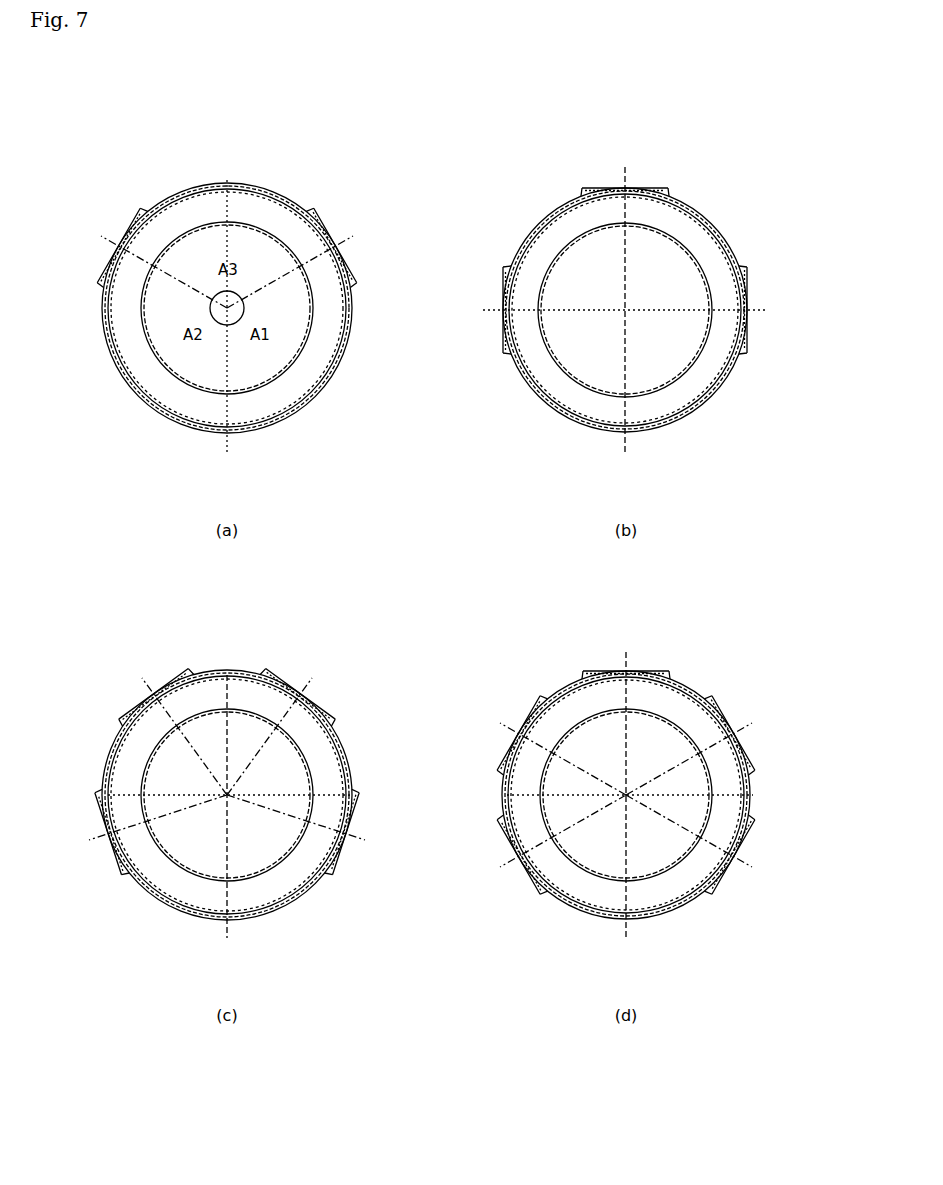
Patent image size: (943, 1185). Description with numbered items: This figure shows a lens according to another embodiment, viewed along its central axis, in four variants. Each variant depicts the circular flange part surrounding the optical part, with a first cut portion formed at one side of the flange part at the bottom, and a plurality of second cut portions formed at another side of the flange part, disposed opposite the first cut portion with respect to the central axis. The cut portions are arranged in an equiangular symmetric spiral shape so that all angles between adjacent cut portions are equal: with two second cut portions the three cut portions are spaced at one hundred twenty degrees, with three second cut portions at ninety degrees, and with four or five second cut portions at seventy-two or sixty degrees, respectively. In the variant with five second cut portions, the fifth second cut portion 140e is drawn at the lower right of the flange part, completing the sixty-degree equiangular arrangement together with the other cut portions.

The second cut portion 140e is at (746, 862).